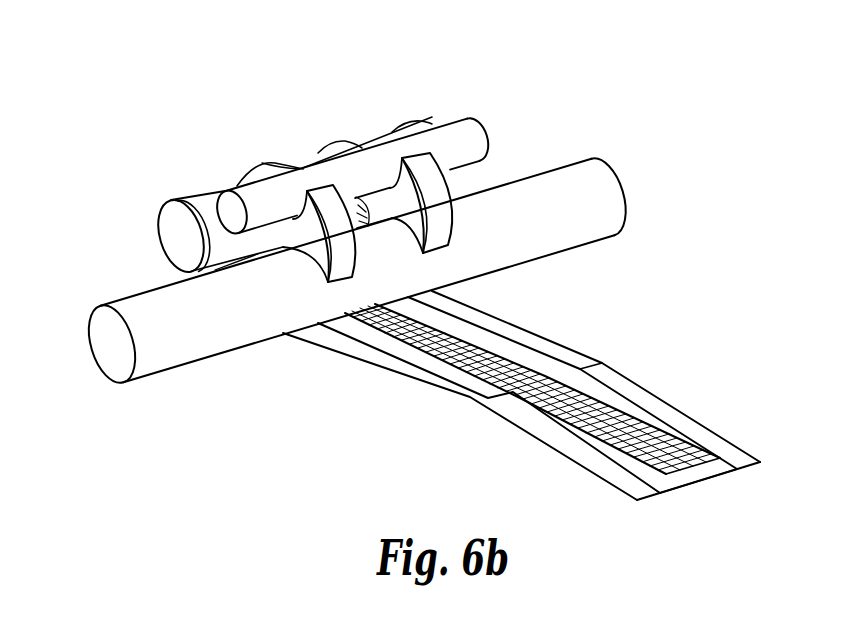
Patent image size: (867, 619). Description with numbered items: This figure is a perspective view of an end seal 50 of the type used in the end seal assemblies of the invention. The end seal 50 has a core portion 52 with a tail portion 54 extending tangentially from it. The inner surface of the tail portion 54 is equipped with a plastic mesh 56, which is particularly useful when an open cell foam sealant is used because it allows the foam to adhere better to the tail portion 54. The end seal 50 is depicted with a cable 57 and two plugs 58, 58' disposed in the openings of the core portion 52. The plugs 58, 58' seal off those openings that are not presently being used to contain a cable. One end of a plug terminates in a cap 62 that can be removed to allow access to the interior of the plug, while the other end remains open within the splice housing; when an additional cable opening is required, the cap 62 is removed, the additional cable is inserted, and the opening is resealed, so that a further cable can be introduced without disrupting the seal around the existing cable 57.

The end seal 50 is at (616, 96).
The core portion 52 is at (370, 135).
The tail portion 54 is at (525, 333).
The plastic mesh 56 is at (641, 428).
The cable 57 is at (133, 303).
The plug 58 is at (315, 178).
The plug 58' is at (502, 124).
The cap 62 is at (165, 204).